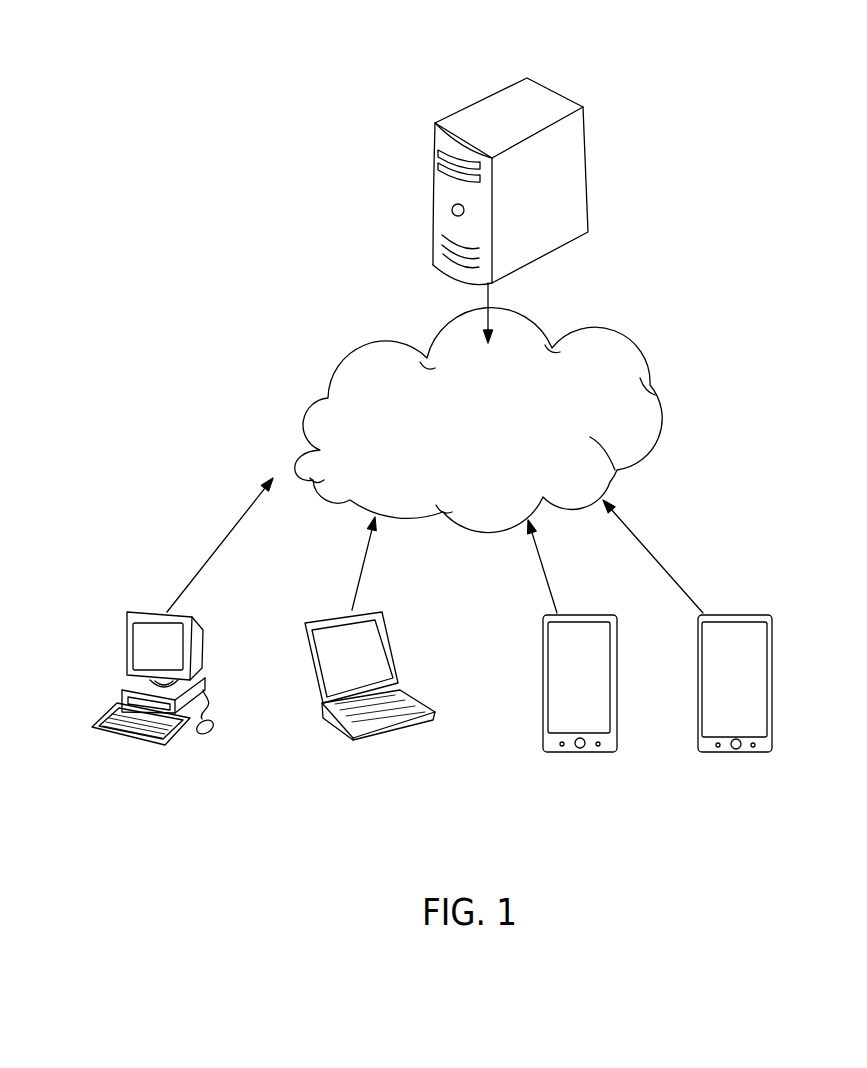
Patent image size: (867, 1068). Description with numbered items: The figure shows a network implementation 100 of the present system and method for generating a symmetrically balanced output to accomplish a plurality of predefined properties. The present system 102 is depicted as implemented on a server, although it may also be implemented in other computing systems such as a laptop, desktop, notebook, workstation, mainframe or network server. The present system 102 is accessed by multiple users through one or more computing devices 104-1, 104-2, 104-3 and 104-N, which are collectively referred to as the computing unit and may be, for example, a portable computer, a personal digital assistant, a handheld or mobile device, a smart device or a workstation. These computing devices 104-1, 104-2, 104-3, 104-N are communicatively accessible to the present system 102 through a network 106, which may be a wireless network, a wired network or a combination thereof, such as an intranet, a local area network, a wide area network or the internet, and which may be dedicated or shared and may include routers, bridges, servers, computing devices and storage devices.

The network implementation 100 is at (140, 80).
The present system 102 is at (587, 175).
The network 106 is at (478, 420).
The computing device 104-1 is at (178, 740).
The computing device 104-2 is at (382, 735).
The computing device 104-3 is at (570, 747).
The computing device 104-N is at (748, 748).